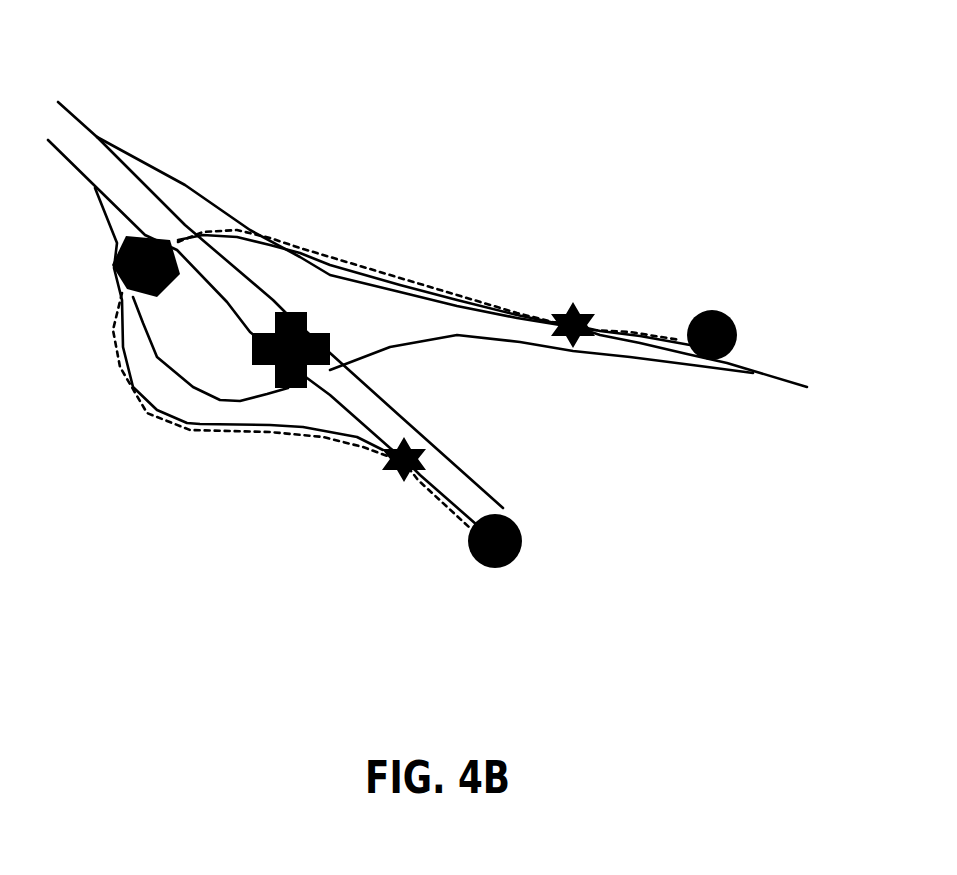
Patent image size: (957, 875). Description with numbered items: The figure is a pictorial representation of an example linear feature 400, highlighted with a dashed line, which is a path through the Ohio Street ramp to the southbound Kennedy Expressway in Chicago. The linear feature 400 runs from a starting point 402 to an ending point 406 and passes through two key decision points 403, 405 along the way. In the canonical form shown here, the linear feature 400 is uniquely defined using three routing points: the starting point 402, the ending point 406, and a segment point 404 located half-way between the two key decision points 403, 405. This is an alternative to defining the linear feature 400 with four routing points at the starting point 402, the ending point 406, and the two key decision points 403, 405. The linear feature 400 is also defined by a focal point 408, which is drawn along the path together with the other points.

The linear feature 400 is at (507, 313).
The starting point 402 is at (702, 310).
The key decision point 403 is at (593, 313).
The segment point 404 is at (153, 235).
The key decision point 405 is at (397, 477).
The ending point 406 is at (512, 562).
The focal point 408 is at (280, 388).